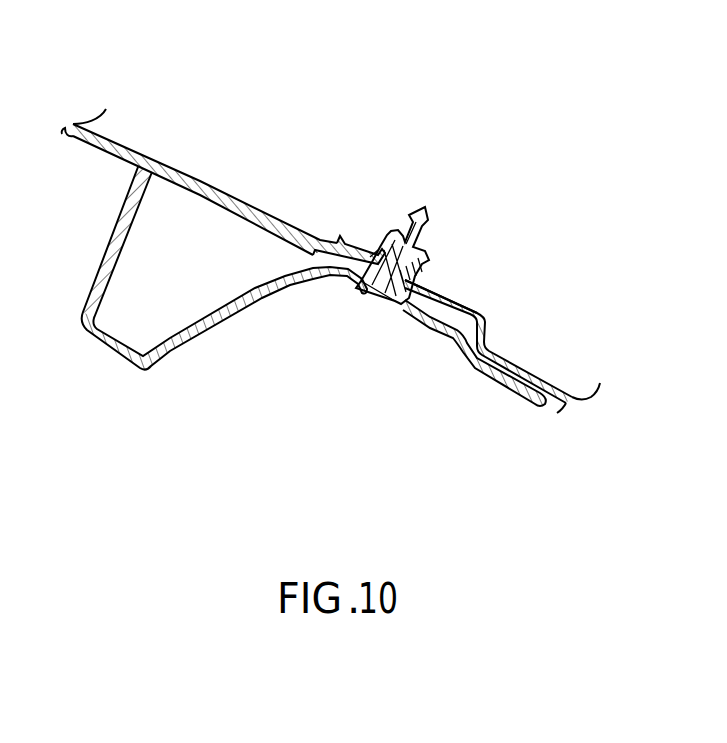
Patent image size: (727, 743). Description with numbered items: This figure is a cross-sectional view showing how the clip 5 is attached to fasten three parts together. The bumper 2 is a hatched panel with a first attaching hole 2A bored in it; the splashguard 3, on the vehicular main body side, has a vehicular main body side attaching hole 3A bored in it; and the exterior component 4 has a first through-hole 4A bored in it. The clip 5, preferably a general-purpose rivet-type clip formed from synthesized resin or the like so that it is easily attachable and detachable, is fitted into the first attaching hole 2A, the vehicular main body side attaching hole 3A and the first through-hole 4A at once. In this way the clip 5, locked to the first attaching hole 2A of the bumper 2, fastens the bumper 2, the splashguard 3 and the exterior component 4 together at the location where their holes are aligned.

The bumper 2 is at (180, 168).
The first attaching hole 2A is at (355, 246).
The splashguard 3 is at (518, 358).
The vehicular main body side attaching hole 3A is at (420, 277).
The exterior component 4 is at (161, 356).
The first through-hole 4A is at (433, 330).
The clip 5 is at (380, 302).